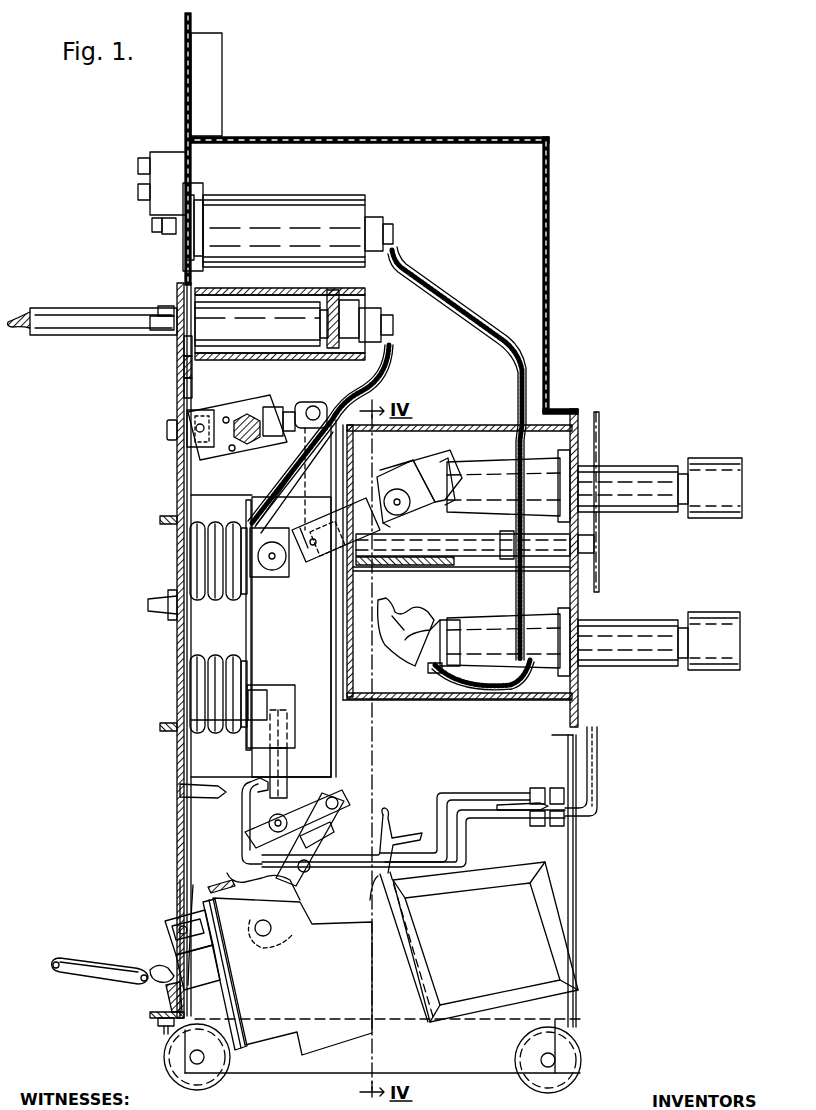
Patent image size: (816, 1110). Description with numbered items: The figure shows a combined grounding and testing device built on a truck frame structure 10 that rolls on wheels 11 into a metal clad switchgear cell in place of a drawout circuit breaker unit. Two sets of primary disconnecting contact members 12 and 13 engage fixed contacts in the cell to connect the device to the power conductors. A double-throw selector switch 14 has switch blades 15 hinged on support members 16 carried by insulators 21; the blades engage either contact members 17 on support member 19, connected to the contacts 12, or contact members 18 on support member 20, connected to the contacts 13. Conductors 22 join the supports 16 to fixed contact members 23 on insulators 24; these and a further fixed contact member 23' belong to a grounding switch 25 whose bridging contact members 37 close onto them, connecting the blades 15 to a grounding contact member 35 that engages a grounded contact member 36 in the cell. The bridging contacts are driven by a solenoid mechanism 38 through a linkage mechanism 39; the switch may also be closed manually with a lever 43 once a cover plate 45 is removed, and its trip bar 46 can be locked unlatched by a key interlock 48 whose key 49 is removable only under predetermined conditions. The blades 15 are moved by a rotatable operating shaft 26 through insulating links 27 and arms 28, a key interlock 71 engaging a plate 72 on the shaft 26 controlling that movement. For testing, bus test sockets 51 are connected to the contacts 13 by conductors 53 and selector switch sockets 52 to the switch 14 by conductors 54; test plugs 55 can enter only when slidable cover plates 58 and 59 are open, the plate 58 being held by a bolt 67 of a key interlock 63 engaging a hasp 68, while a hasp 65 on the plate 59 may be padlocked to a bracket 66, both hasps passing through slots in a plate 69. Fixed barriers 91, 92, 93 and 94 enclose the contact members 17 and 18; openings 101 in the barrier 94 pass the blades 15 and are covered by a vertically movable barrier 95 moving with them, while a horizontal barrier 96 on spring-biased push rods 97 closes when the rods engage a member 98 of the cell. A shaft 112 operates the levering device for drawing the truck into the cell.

The truck frame structure 10 is at (158, 658).
The wheels 11 is at (164, 1058).
The primary disconnecting contact members 12 is at (718, 464).
The primary disconnecting contact members 13 is at (718, 617).
The double-throw selector switch 14 is at (318, 611).
The switch blades 15 is at (282, 568).
The support members 16 is at (281, 582).
The contact members 17 is at (410, 473).
The contact members 18 is at (420, 618).
The support member 19 is at (460, 510).
The support member 20 is at (490, 619).
The insulators 21 is at (160, 560).
The conductors 22 is at (249, 653).
The fixed contact members 23 is at (261, 717).
The fixed contact member 23' is at (239, 810).
The insulators 24 is at (158, 692).
The grounding switch 25 is at (362, 843).
The rotatable operating shaft 26 is at (246, 414).
The insulating links 27 is at (303, 452).
The arms 28 is at (300, 408).
The grounding contact member 35 is at (544, 795).
The grounded contact member 36 is at (598, 795).
The bridging contact members 37 is at (288, 710).
The solenoid mechanism 38 is at (316, 940).
The linkage mechanism 39 is at (318, 872).
The lever 43 is at (110, 970).
The cover plate 45 is at (216, 960).
The trip bar 46 is at (196, 900).
The key interlock 48 is at (168, 956).
The key 49 is at (163, 980).
The test sockets 51 is at (358, 204).
The test sockets 52 is at (346, 292).
The conductors 53 is at (466, 312).
The conductors 54 is at (390, 372).
The test plugs 55 is at (114, 315).
The slidable cover plate 58 is at (188, 240).
The slidable cover plate 59 is at (178, 349).
The key interlock 63 is at (170, 162).
The hasp 65 is at (164, 320).
The bracket 66 is at (178, 364).
The bolt 67 is at (165, 236).
The hasp 68 is at (158, 224).
The plate 69 is at (176, 388).
The key interlock 71 is at (167, 430).
The plate 72 is at (228, 452).
The fixed barrier 91 is at (450, 428).
The fixed barrier 92 is at (452, 702).
The fixed barrier 93 is at (472, 569).
The fixed barrier 94 is at (356, 657).
The vertically disposed barrier 95 is at (356, 456).
The horizontally disposed barrier 96 is at (396, 566).
The push rods 97 is at (499, 527).
The member 98 is at (599, 437).
The openings 101 is at (346, 606).
The shaft 112 is at (178, 789).